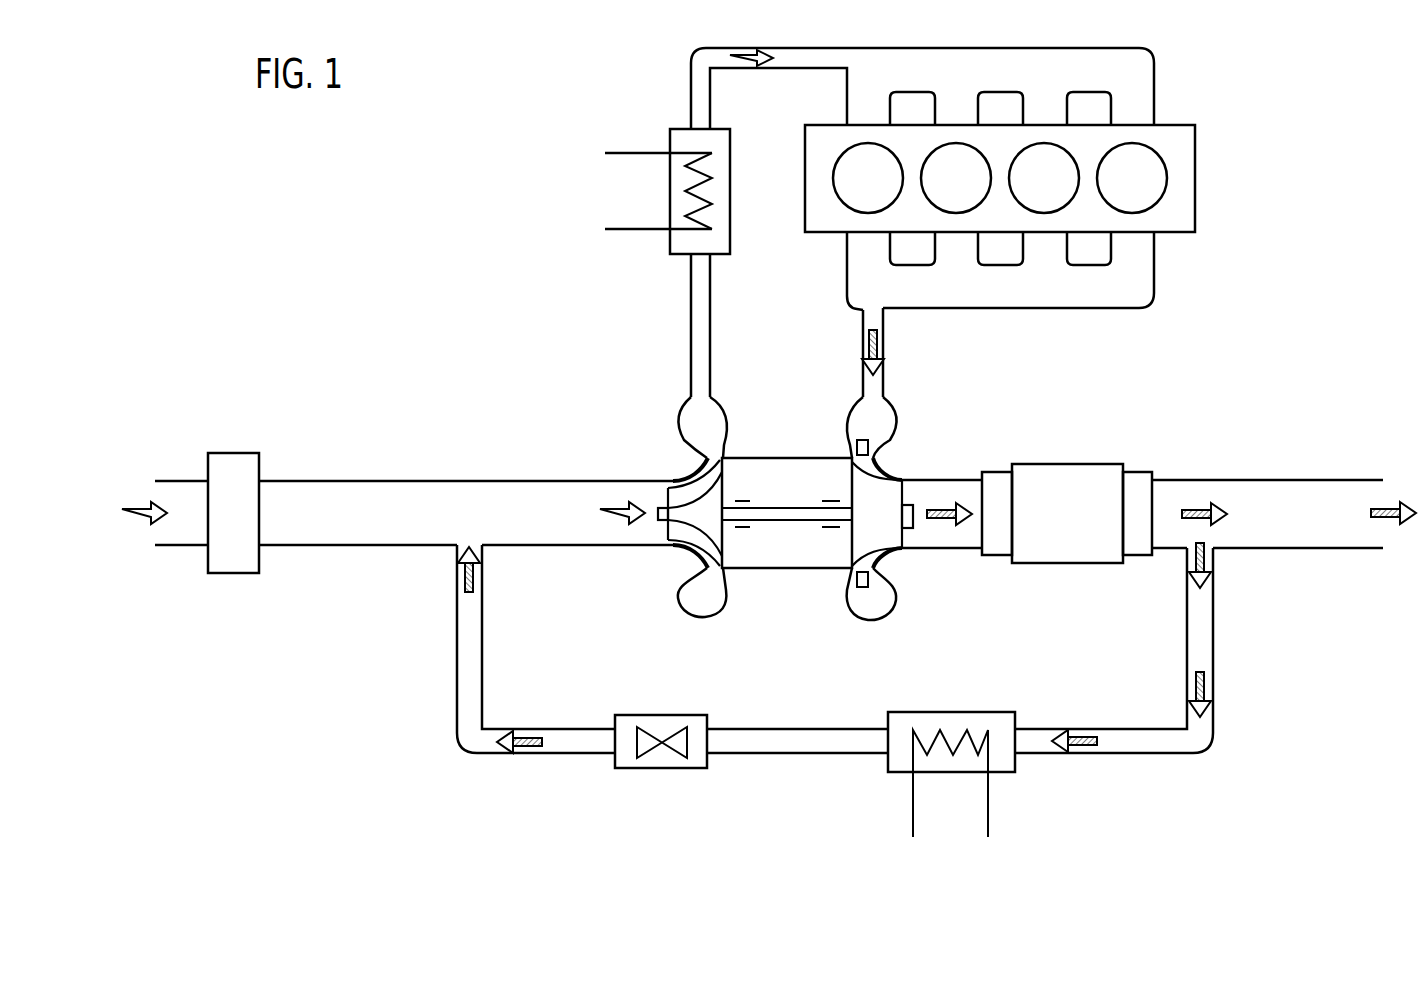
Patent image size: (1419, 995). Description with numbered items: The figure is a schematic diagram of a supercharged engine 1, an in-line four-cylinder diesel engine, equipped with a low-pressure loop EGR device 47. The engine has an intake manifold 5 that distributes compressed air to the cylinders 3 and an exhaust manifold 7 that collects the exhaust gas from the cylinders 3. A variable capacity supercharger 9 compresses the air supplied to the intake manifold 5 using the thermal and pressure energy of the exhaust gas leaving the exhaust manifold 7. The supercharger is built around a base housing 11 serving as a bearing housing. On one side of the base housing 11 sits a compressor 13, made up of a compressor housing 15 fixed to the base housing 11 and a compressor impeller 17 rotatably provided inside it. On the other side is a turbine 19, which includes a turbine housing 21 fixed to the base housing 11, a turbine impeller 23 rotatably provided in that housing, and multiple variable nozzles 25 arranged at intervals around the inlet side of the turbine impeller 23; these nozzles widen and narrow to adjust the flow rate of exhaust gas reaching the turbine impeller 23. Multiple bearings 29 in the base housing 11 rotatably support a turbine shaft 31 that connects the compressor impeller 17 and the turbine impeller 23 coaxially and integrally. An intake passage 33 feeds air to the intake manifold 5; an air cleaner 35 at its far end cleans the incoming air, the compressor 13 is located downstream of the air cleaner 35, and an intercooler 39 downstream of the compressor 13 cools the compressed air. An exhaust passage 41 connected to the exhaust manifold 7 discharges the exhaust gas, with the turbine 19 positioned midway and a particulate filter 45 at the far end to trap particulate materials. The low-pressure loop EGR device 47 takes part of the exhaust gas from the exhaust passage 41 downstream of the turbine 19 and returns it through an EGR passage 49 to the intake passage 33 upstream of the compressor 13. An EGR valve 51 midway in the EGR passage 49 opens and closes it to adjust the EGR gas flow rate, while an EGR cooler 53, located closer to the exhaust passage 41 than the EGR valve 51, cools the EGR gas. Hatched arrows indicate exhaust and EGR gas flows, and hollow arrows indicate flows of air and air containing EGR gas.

The supercharged engine 1 is at (1059, 173).
The cylinders 3 is at (860, 194).
The intake manifold 5 is at (1154, 96).
The exhaust manifold 7 is at (1154, 270).
The variable capacity supercharger 9 is at (794, 448).
The base housing 11 is at (752, 458).
The compressor 13 is at (664, 436).
The compressor housing 15 is at (690, 600).
The compressor impeller 17 is at (663, 530).
The turbine 19 is at (916, 417).
The turbine housing 21 is at (863, 614).
The turbine impeller 23 is at (882, 550).
The variable nozzles 25 is at (868, 447).
The bearings 29 is at (742, 532).
The turbine shaft 31 is at (784, 524).
The intake passage 33 is at (691, 342).
The air cleaner 35 is at (232, 453).
The intercooler 39 is at (683, 128).
The exhaust passage 41 is at (885, 347).
The particulate filter 45 is at (1072, 464).
The low-pressure loop EGR device 47 is at (1262, 681).
The EGR passage 49 is at (1105, 755).
The EGR valve 51 is at (660, 770).
The EGR cooler 53 is at (1000, 773).